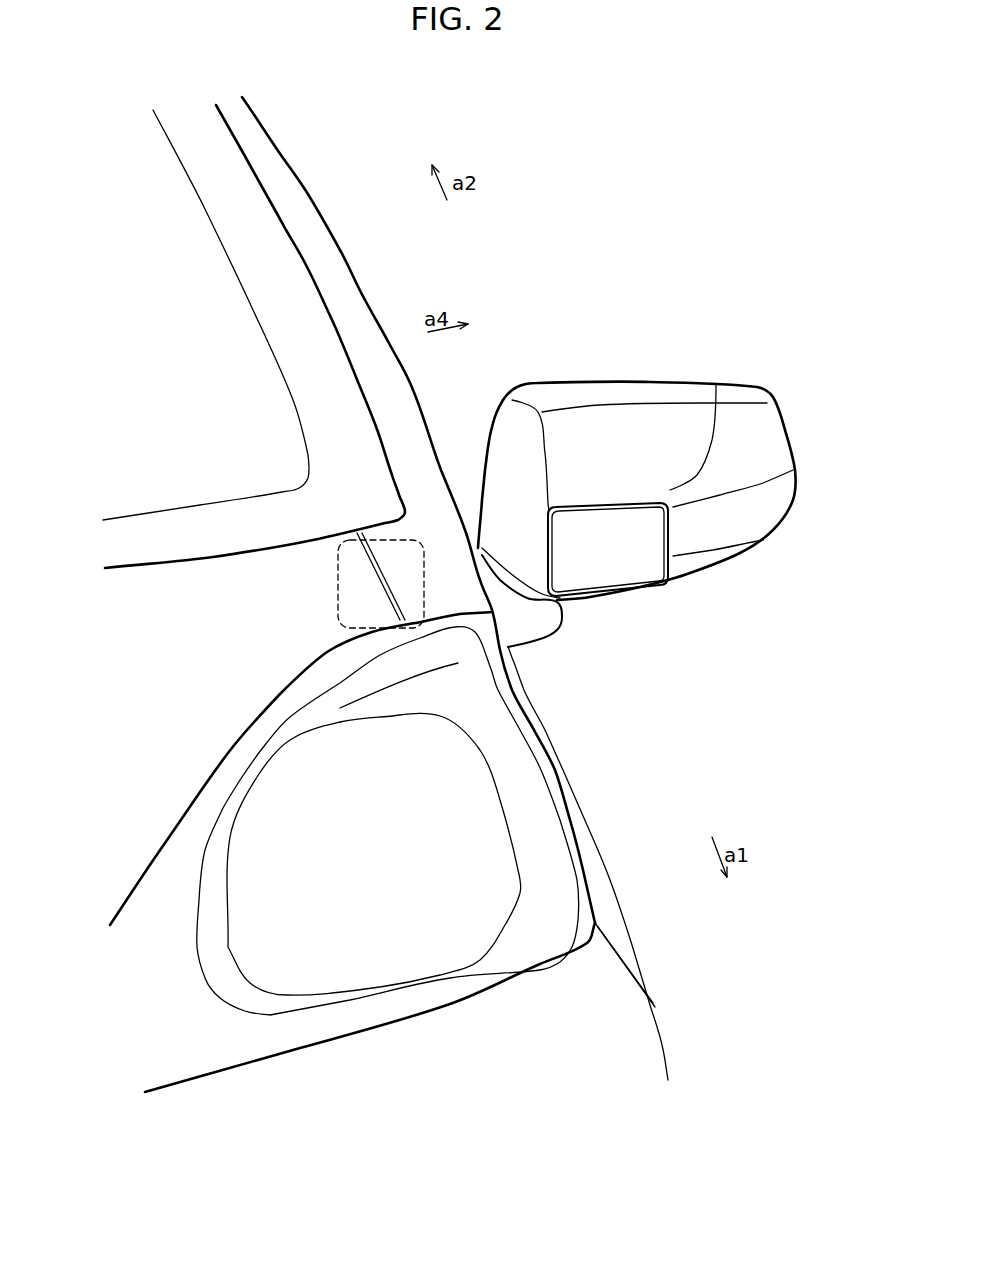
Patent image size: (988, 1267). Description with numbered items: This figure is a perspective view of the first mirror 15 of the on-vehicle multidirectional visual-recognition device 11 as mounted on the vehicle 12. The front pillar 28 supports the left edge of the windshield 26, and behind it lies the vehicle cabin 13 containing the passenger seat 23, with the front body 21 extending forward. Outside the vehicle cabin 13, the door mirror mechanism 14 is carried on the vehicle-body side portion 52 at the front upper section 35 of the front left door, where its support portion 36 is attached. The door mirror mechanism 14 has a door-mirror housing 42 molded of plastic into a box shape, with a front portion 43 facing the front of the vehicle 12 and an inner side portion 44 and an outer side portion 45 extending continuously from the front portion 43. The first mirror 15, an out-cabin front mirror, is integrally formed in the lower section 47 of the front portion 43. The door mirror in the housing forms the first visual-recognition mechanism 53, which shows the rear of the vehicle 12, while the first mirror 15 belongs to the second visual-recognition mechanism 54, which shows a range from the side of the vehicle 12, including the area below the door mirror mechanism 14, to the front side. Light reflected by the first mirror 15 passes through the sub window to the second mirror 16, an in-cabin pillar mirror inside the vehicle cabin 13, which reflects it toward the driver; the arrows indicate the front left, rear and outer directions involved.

The on-vehicle multidirectional visual-recognition device 11 is at (512, 265).
The vehicle 12 is at (575, 110).
The vehicle cabin 13 is at (88, 275).
The door mirror mechanism 14 is at (661, 373).
The first mirror (out-cabin front mirror) 15 is at (626, 583).
The second mirror (in-cabin pillar mirror) 16 is at (330, 537).
The front body 21 is at (713, 989).
The passenger seat 23 is at (183, 378).
The windshield 26 is at (107, 421).
The front pillar 28 is at (317, 227).
The front upper section 35 is at (520, 670).
The support portion 36 is at (550, 626).
The door-mirror housing 42 is at (585, 393).
The front portion 43 is at (716, 385).
The inner side portion 44 is at (503, 467).
The outer side portion 45 is at (795, 457).
The lower section 47 is at (677, 552).
The vehicle-body side portion 52 is at (598, 770).
The first visual-recognition mechanism 53 is at (519, 332).
The second visual-recognition mechanism 54 is at (690, 657).